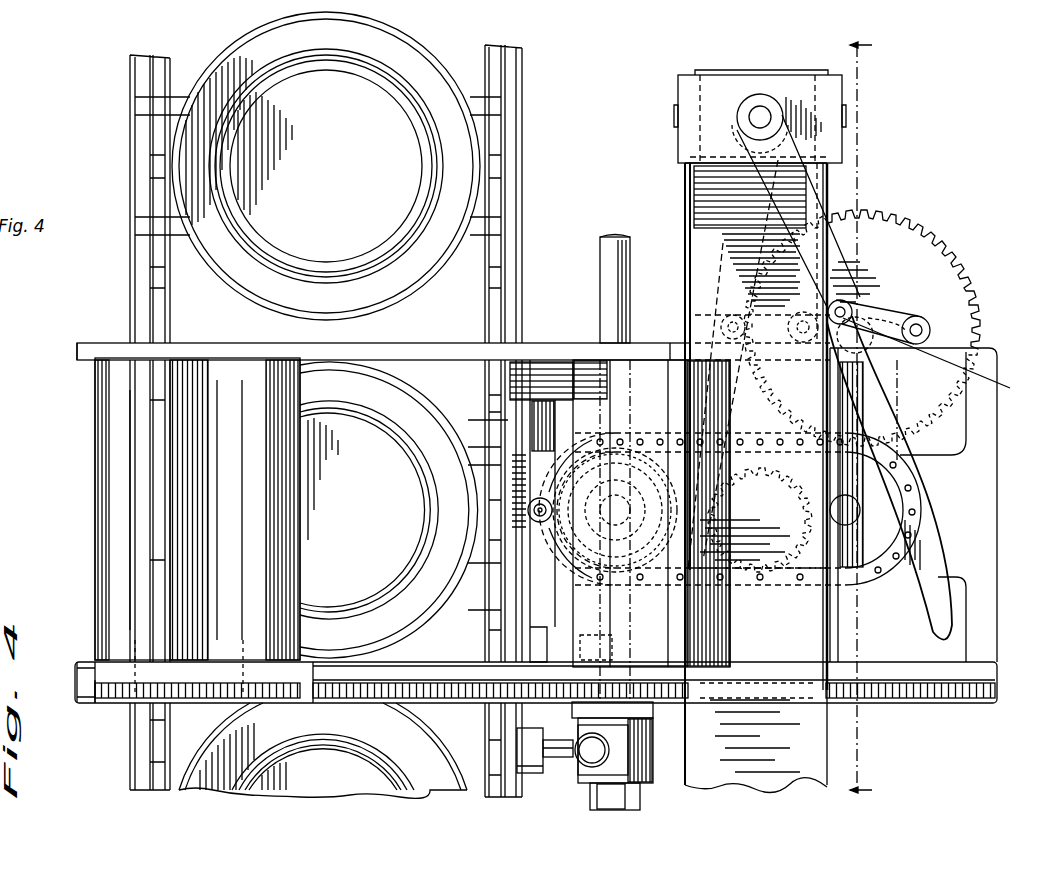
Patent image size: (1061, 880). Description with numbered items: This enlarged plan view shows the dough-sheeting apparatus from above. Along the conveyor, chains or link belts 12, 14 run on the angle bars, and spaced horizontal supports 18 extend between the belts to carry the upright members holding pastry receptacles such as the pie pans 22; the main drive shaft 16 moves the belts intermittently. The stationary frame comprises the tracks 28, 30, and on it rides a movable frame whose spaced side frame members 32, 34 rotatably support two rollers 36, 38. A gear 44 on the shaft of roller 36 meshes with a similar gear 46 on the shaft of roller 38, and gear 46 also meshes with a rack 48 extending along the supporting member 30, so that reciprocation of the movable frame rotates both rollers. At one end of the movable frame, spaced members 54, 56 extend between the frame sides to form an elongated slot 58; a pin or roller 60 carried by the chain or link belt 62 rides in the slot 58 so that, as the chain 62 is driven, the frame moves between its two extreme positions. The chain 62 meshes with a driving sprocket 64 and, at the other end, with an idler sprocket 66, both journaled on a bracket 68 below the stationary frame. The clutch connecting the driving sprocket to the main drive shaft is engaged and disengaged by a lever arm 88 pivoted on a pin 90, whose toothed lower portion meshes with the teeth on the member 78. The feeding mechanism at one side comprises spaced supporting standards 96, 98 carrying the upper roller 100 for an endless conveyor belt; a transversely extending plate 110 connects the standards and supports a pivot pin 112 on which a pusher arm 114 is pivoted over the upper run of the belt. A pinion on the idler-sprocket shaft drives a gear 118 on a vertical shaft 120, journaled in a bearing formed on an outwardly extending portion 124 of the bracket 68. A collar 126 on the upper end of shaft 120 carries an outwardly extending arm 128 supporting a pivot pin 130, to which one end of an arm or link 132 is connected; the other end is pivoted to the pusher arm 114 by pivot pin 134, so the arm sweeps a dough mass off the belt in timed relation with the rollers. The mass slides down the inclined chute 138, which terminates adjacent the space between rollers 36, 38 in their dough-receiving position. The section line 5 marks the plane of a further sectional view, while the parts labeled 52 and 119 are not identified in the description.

The section line 5- 5 is at (861, 419).
The chain or link belt 12 is at (168, 318).
The chain or link belt 14 is at (487, 283).
The main drive shaft 16 is at (598, 285).
The horizontal supports 18 is at (476, 572).
The pie pans 22 is at (268, 303).
The track 28 is at (438, 342).
The track 30 is at (450, 705).
The side frame member 32 is at (455, 362).
The side frame member 34 is at (450, 662).
The roller 36 is at (95, 426).
The roller 38 is at (300, 531).
The gear 44 is at (136, 657).
The gear 46 is at (244, 657).
The rack 48 is at (378, 700).
The beam end cap 52 is at (103, 706).
The spaced member 54 is at (500, 421).
The spaced member 56 is at (595, 375).
The elongated slot 58 is at (556, 420).
The pin or roller 60 is at (538, 524).
The chain or link belt 62 is at (752, 590).
The driving sprocket 64 is at (640, 440).
The idler sprocket 66 is at (775, 484).
The bracket 68 is at (985, 518).
The member 78 is at (640, 757).
The lever arm 88 is at (575, 768).
The pin 90 is at (552, 740).
The supporting standard 96 is at (690, 224).
The supporting standard 98 is at (835, 200).
The upper roller 100 is at (700, 282).
The transversely extending plate 110 is at (690, 147).
The pivot pin 112 is at (750, 110).
The pusher arm 114 is at (826, 180).
The gear 118 is at (930, 238).
The lever arm 119 is at (930, 476).
The shaft 120 is at (905, 306).
The outwardly extending portion 124 is at (900, 400).
The collar 126 is at (900, 372).
The outwardly extending arm 128 is at (944, 358).
The pivot pin 130 is at (930, 331).
The arm or link 132 is at (882, 305).
The pivot pin 134 is at (848, 302).
The inclined chute 138 is at (645, 372).